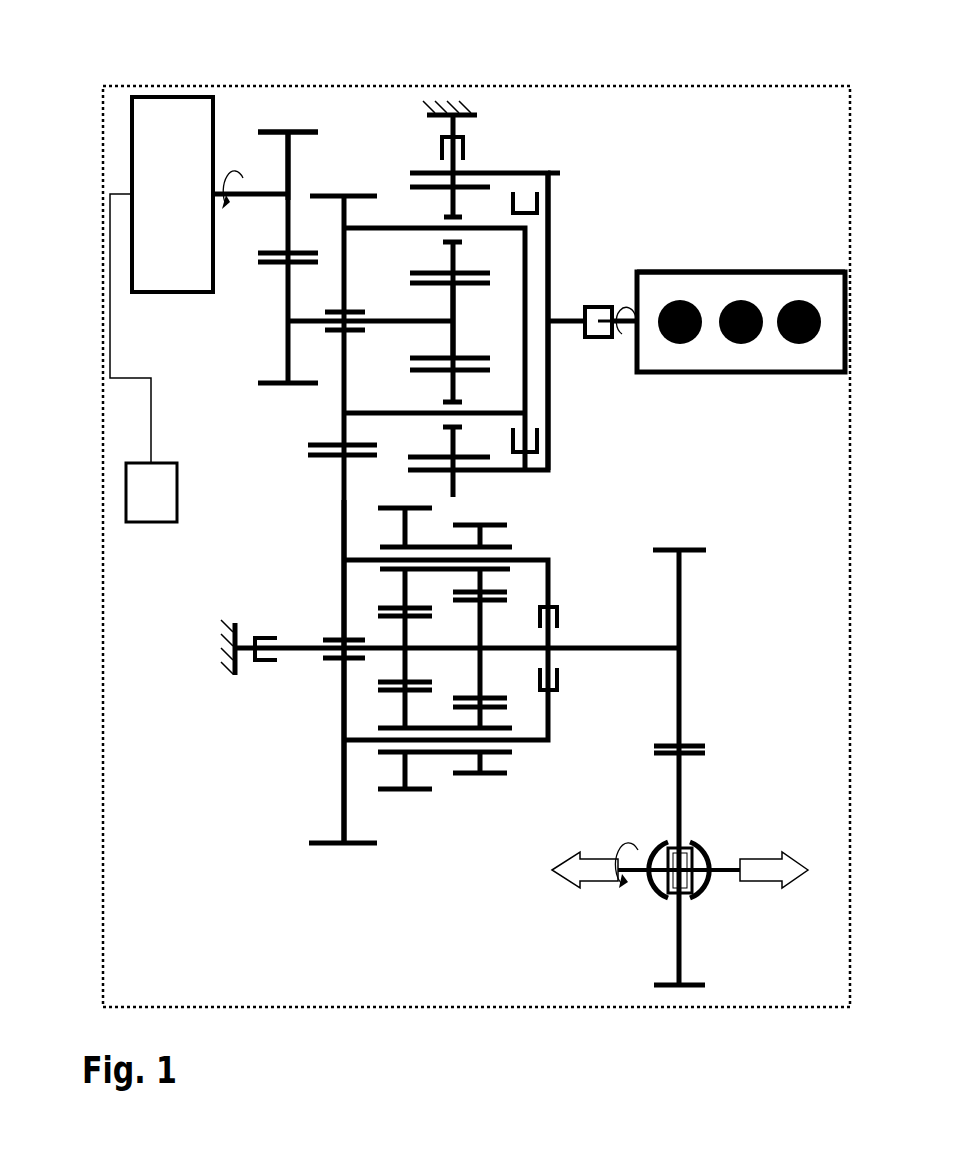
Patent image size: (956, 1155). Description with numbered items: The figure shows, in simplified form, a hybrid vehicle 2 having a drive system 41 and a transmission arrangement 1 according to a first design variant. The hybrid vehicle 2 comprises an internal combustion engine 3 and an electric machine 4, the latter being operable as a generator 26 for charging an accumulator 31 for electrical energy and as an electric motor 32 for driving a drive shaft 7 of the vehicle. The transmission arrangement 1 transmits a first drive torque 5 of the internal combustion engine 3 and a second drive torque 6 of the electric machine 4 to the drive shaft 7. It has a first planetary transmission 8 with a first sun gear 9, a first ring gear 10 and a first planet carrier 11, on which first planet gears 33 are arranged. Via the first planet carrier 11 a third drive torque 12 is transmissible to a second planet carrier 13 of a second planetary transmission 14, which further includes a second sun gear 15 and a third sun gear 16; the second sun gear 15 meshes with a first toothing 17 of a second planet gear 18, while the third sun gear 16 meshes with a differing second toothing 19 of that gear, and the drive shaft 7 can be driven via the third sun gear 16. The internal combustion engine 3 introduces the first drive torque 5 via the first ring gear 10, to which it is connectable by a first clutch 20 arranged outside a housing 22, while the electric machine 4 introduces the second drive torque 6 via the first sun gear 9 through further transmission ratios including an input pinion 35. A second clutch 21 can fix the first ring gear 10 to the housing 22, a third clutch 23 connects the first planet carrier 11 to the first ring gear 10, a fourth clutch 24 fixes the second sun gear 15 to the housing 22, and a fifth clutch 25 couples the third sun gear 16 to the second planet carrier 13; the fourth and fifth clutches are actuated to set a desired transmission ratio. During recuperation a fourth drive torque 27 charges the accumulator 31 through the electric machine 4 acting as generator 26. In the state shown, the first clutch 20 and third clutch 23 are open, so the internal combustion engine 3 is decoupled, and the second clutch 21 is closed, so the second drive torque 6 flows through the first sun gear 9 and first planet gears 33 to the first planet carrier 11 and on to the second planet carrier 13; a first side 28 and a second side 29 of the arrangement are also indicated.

The transmission arrangement 1 is at (585, 208).
The hybrid vehicle 2 is at (575, 86).
The internal combustion engine 3 is at (735, 365).
The electric machine 4 is at (182, 258).
The first drive torque 5 is at (623, 312).
The second drive torque 6 is at (236, 213).
The drive shaft 7 is at (718, 858).
The first planetary transmission 8 is at (373, 155).
The first sun gear 9 is at (455, 300).
The first ring gear 10 is at (553, 248).
The first planet carrier 11 is at (397, 228).
The third drive torque 12 is at (344, 410).
The second planet carrier 13 is at (340, 517).
The second planetary transmission 14 is at (570, 545).
The second sun gear 15 is at (400, 632).
The third sun gear 16 is at (483, 615).
The first toothing 17 is at (405, 497).
The second planet gear 18 is at (503, 543).
The second toothing 19 is at (475, 778).
The first clutch 20 is at (595, 337).
The second clutch 21 is at (464, 150).
The housing 22 is at (455, 110).
The third clutch 23 is at (525, 190).
The fourth clutch 24 is at (262, 662).
The fifth clutch 25 is at (555, 612).
The generator 26 is at (155, 122).
The fourth drive torque 27 is at (637, 850).
The first side 28 is at (252, 155).
The second side 29 is at (722, 210).
The accumulator 31 is at (152, 500).
The electric motor 32 is at (148, 173).
The first planet gear 33 is at (443, 258).
The input pinion 35 is at (290, 152).
The drive system 41 is at (688, 120).